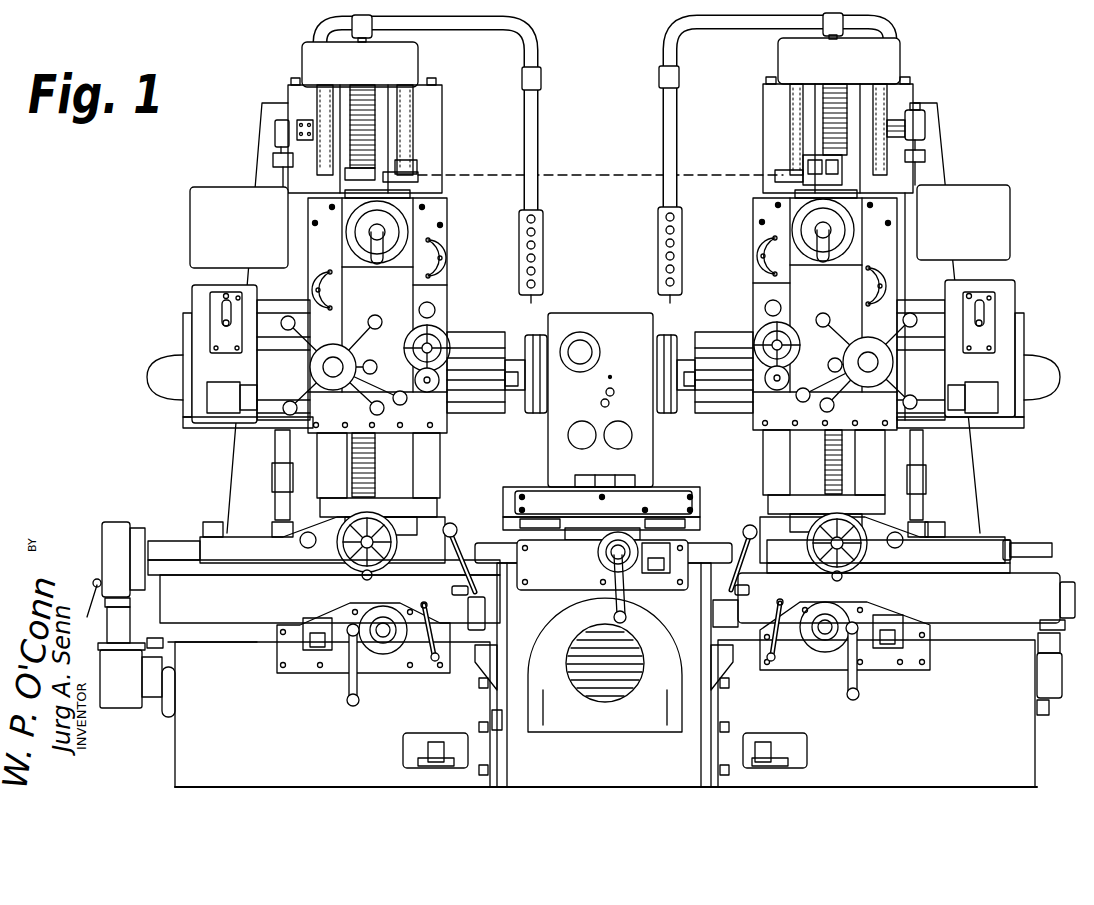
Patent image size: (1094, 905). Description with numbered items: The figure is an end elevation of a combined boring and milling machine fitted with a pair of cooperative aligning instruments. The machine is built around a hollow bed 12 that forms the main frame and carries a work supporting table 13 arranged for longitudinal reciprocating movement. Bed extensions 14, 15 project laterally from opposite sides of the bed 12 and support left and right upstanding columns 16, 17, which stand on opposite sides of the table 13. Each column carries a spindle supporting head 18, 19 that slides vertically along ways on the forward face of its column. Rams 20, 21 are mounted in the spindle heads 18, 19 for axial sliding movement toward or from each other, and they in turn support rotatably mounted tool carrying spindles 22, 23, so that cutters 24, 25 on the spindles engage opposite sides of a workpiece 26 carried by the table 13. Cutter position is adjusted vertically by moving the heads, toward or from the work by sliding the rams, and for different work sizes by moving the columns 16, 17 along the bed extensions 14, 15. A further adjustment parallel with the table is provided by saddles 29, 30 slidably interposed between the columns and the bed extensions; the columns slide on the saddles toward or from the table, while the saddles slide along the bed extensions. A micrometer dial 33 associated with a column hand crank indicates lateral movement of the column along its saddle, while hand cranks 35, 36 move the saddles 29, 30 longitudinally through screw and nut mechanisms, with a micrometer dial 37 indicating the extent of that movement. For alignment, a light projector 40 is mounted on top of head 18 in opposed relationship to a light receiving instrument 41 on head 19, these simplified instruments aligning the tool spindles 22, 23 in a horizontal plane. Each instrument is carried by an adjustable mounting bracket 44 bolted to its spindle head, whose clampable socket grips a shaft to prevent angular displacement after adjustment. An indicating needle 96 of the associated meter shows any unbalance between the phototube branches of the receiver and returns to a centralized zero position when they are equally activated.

The bed 12 is at (587, 763).
The work supporting table 13 is at (652, 500).
The bed extension 14 is at (197, 727).
The bed extension 15 is at (993, 740).
The column 16 is at (425, 468).
The column 17 is at (953, 455).
The spindle supporting head 18 is at (347, 405).
The spindle supporting head 19 is at (768, 405).
The ram 20 is at (460, 338).
The ram 21 is at (727, 334).
The tool carrying spindle 22 is at (511, 358).
The tool carrying spindle 23 is at (692, 358).
The cutter 24 is at (532, 410).
The cutter 25 is at (668, 413).
The workpiece 26 is at (608, 322).
The saddle 29 is at (170, 580).
The saddle 30 is at (1013, 588).
The micrometer dial 33 is at (820, 643).
The hand crank 35 is at (347, 701).
The hand crank 36 is at (860, 694).
The micrometer dial 37 is at (393, 657).
The light projector 40 is at (424, 158).
The light receiving instrument 41 is at (783, 163).
The mounting bracket 44 is at (372, 192).
The indicating needle 96 is at (847, 168).